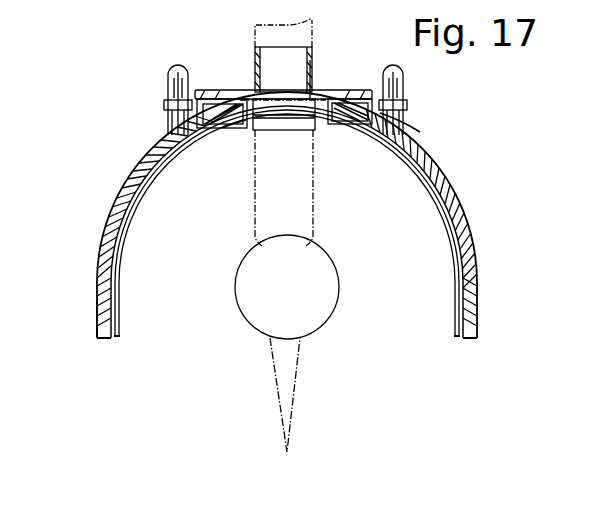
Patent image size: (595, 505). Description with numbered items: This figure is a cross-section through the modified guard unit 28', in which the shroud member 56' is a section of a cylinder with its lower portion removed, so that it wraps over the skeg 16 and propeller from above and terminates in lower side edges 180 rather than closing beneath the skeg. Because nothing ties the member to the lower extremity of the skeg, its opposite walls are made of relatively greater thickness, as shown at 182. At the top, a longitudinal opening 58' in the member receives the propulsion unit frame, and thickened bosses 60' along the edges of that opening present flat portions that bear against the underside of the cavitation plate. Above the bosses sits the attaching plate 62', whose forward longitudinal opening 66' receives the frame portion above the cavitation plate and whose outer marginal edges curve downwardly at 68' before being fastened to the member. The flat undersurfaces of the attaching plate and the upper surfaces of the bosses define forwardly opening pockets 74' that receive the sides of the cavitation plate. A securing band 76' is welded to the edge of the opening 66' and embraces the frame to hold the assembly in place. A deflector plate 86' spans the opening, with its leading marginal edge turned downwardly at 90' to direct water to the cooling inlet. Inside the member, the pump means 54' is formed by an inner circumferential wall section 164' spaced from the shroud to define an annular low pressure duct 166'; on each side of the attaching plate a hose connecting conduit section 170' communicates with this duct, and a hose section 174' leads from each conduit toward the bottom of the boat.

The skeg 16 is at (297, 366).
The guard unit 28' is at (297, 215).
The pump means 54' is at (416, 123).
The cylindrical member 56' is at (80, 319).
The longitudinal opening 58' is at (228, 130).
The bosses 60' is at (221, 143).
The attaching plate 62' is at (283, 80).
The forward longitudinal opening 66' is at (283, 69).
The downwardly curved marginal edge 68' is at (184, 118).
The pockets 74' is at (342, 128).
The securing band 76' is at (302, 44).
The deflector plate 86' is at (283, 128).
The downwardly turned leading marginal edge 90' is at (329, 79).
The inner circumferential wall section 164' is at (201, 223).
The annular low pressure duct 166' is at (373, 223).
The hose connecting conduit section 170' is at (277, 94).
The hose section 174' is at (288, 96).
The lower side edges 180 is at (115, 343).
The thickened opposite walls 182 is at (124, 197).